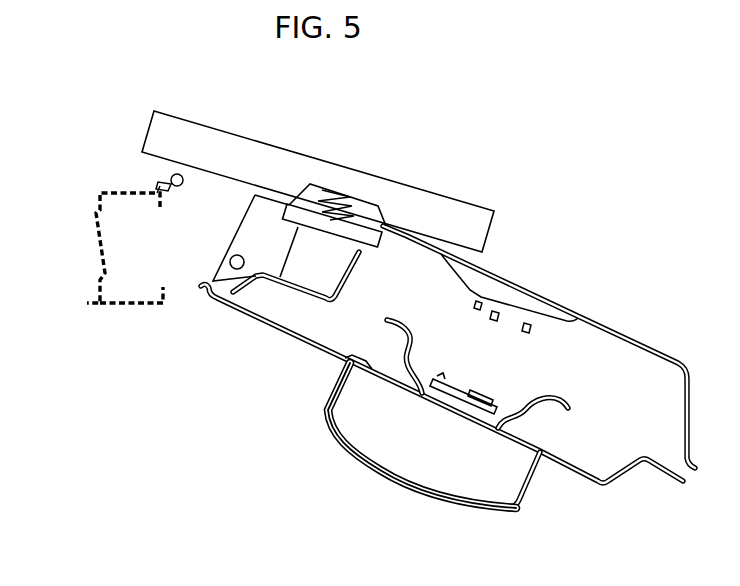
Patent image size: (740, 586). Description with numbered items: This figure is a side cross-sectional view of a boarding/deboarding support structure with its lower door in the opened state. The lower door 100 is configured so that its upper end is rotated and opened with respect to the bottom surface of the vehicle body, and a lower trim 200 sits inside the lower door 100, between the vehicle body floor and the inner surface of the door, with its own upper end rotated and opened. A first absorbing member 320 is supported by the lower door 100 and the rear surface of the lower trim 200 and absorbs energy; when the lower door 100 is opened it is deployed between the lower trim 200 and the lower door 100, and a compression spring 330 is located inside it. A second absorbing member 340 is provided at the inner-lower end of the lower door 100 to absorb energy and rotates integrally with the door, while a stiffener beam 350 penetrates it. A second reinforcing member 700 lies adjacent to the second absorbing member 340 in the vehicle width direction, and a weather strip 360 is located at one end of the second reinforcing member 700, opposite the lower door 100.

The lower door 100 is at (585, 478).
The lower trim 200 is at (208, 141).
The first absorbing member 320 is at (355, 230).
The compression spring 330 is at (333, 198).
The second absorbing member 340 is at (267, 208).
The stiffener beam 350 is at (232, 270).
The weather strip 360 is at (173, 176).
The second reinforcing member 700 is at (96, 212).